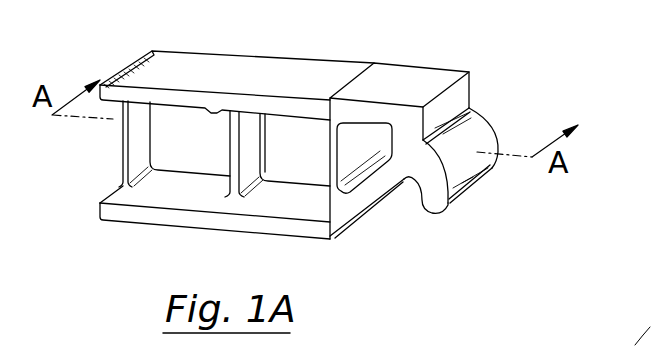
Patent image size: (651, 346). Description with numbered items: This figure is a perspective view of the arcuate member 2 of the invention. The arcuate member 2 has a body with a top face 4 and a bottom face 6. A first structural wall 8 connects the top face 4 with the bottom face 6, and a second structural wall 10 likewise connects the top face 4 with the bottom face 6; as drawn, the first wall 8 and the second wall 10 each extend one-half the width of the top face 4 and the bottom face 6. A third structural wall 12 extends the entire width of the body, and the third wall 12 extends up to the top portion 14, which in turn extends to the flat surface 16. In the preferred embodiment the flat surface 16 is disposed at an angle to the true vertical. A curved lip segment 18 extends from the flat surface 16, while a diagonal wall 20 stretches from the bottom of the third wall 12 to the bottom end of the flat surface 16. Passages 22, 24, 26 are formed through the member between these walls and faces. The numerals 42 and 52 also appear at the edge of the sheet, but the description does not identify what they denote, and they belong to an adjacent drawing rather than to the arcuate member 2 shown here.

The arcuate member 2 is at (301, 145).
The top face 4 is at (248, 65).
The bottom face 6 is at (252, 234).
The first structural wall 8 is at (123, 152).
The second structural wall 10 is at (237, 128).
The third structural wall 12 is at (327, 140).
The top portion 14 is at (405, 78).
The flat surface 16 is at (450, 102).
The curved lip segment 18 is at (480, 187).
The diagonal wall 20 is at (372, 195).
The passage 22 is at (180, 127).
The passage 24 is at (295, 132).
The passage 26 is at (373, 137).
The element of adjacent figure 42 is at (527, 345).
The element of adjacent figure 52 is at (570, 345).